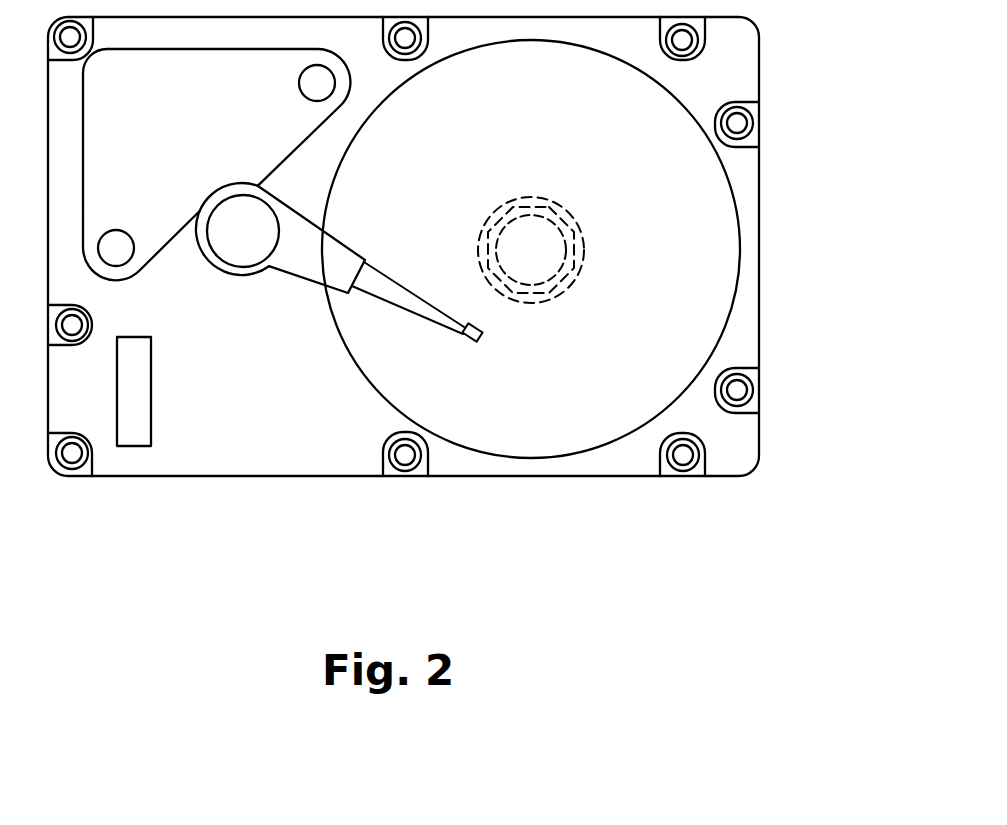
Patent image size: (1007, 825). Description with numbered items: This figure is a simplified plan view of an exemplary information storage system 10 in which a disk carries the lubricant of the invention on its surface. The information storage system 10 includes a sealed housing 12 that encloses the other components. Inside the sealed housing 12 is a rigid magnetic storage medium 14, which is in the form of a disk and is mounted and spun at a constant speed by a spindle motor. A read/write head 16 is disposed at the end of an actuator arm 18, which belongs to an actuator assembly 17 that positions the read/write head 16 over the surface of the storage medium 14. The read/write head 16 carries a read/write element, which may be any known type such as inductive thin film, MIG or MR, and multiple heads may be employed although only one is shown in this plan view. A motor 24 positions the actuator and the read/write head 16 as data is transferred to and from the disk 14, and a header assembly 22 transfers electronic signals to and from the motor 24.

The information storage system 10 is at (549, 264).
The sealed housing 12 is at (777, 212).
The rigid magnetic storage medium 14 is at (856, 488).
The read/write head 16 is at (474, 338).
The actuator assembly 17 is at (393, 243).
The actuator arm 18 is at (395, 288).
The header assembly 22 is at (152, 400).
The motor 24 is at (192, 178).